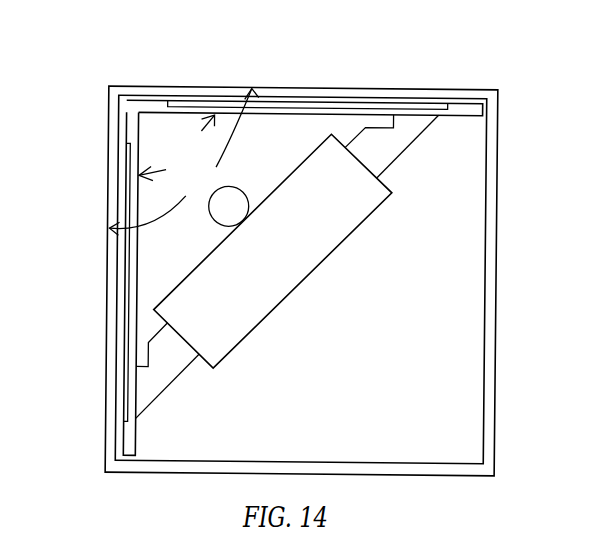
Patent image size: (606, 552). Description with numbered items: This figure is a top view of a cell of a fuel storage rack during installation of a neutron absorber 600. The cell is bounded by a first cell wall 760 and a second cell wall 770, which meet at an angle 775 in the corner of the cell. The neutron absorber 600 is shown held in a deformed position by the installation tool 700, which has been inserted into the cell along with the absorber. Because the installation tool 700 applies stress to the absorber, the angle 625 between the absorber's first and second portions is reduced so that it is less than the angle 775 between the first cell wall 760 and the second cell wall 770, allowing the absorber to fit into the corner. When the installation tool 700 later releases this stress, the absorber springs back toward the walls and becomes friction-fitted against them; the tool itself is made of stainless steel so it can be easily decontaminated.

The neutron absorber 600 is at (513, 57).
The angle 625 is at (177, 147).
The installation tool 700 is at (287, 266).
The first cell wall 760 is at (308, 89).
The second cell wall 770 is at (110, 212).
The angle 775 is at (183, 161).